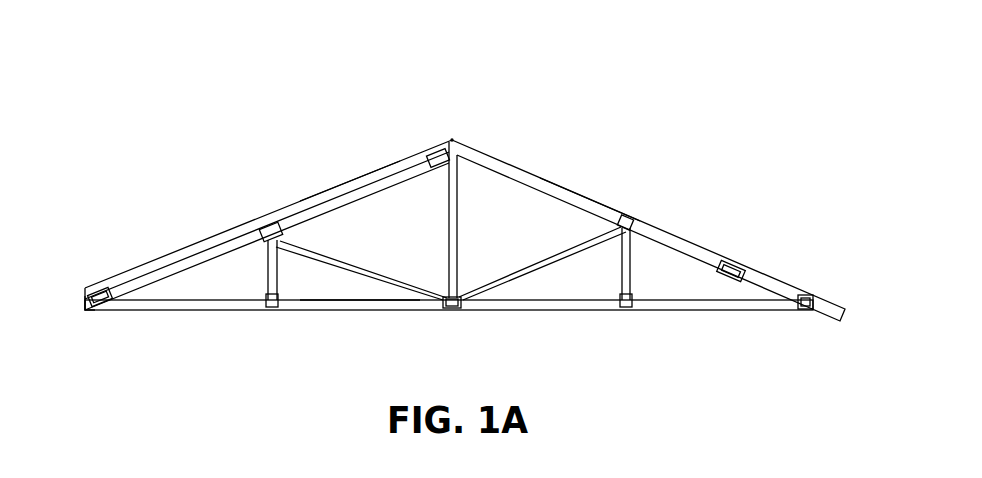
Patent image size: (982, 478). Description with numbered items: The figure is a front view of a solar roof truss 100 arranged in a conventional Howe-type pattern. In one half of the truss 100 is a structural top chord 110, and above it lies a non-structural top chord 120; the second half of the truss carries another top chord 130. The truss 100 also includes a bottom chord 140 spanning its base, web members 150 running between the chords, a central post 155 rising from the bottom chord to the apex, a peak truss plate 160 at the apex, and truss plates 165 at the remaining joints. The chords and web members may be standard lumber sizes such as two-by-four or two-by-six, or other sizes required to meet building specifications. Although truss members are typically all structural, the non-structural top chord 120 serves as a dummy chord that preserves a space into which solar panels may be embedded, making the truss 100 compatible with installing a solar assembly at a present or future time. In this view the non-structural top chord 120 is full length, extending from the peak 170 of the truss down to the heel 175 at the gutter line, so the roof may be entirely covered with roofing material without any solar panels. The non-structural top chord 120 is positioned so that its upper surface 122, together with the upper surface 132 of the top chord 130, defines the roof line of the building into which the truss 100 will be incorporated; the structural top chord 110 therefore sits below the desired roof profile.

The solar roof truss 100 is at (268, 102).
The top chord 110 is at (143, 302).
The non-structural top chord 120 is at (385, 165).
The upper surface of non-structural top chord 122 is at (345, 183).
The top chord 130 is at (541, 175).
The upper surface of top chord 132 is at (578, 191).
The bottom chord 140 is at (363, 307).
The web members 150 is at (268, 275).
The central post 155 is at (455, 186).
The peak truss plate 160 is at (440, 150).
The truss plates 165 is at (100, 288).
The peak 170 is at (453, 134).
The heel 175 is at (82, 306).